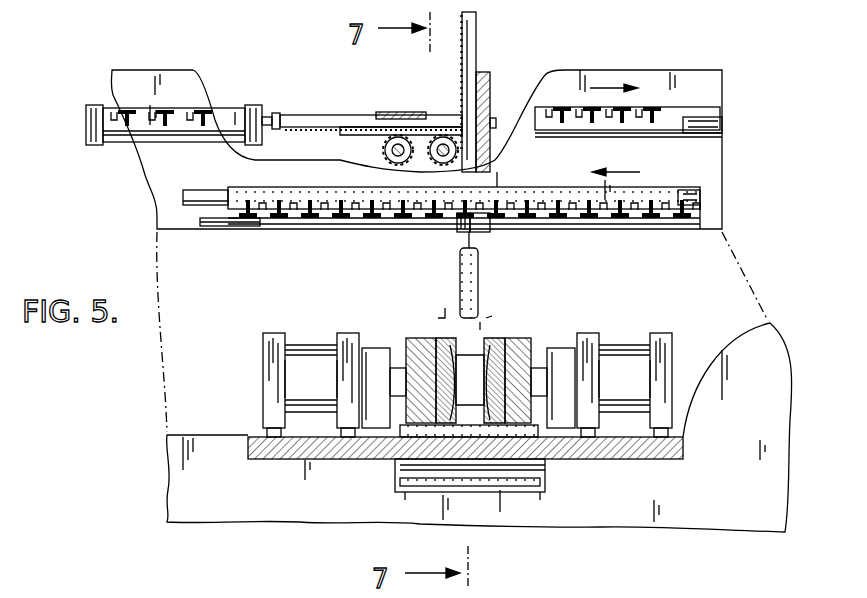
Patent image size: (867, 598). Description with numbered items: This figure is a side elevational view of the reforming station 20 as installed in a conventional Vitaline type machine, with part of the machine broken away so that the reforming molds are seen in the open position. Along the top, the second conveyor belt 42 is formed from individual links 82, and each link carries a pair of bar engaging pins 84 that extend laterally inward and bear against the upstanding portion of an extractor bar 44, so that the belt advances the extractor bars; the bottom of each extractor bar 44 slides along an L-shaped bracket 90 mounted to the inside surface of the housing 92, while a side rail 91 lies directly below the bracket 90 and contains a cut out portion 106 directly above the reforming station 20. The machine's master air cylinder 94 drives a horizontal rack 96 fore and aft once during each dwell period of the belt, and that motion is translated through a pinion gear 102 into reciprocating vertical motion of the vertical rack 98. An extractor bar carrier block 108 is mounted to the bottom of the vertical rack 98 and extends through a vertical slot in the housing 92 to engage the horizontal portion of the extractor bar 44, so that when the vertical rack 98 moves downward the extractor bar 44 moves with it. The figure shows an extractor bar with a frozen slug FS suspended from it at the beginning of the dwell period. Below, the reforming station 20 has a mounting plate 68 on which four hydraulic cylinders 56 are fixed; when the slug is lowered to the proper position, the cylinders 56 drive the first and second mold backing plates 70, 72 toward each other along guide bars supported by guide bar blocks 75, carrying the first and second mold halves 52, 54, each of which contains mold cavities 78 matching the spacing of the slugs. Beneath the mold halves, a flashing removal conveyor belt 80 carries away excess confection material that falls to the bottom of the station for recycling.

The reforming station 20 is at (619, 322).
The second conveyor belt 42 is at (680, 105).
The extractor bar 44 is at (568, 105).
The first mold half 52 is at (446, 345).
The second mold half 54 is at (490, 345).
The hydraulic cylinders 56 is at (308, 345).
The mounting plate 68 is at (668, 456).
The first mold backing plate 70 is at (420, 337).
The second mold backing plate 72 is at (528, 345).
The guide bar blocks 75 is at (372, 350).
The mold cavities 78 is at (456, 356).
The flashing removal conveyor belt 80 is at (535, 445).
The link 82 is at (655, 190).
The bar engaging pins 84 is at (268, 204).
The L-shaped bracket 90 is at (192, 189).
The side rail 91 is at (212, 228).
The housing 92 is at (150, 160).
The master air cylinder 94 is at (236, 112).
The horizontal rack 96 is at (320, 116).
The vertical rack 98 is at (478, 45).
The pinion gear 102 is at (443, 135).
The cut out portion 106 is at (489, 228).
The extractor bar carrier block 108 is at (457, 228).
The frozen slug FS is at (480, 278).